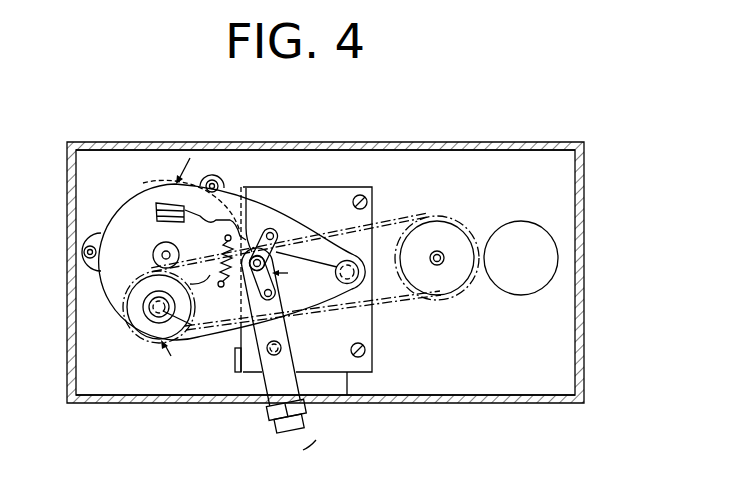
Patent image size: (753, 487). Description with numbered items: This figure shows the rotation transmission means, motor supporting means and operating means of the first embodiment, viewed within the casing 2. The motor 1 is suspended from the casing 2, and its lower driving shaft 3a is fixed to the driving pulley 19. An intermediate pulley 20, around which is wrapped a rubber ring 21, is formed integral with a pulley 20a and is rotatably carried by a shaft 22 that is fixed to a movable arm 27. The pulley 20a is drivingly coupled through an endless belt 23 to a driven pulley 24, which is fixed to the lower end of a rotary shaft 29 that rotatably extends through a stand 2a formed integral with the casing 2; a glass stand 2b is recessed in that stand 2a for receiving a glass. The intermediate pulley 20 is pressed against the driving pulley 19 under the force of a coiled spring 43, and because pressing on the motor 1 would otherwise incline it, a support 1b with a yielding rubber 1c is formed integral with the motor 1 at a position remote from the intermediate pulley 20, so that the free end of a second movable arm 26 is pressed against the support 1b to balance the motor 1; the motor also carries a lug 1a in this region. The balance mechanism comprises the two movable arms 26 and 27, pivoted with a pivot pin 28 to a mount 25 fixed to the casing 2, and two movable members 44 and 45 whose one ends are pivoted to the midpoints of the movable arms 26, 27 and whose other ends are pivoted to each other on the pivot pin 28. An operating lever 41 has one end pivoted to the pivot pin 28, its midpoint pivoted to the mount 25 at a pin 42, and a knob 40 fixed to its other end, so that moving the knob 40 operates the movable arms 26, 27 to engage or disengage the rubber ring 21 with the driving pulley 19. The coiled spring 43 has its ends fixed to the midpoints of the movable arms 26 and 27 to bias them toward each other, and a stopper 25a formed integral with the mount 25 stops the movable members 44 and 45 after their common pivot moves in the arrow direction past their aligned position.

The motor 1 is at (123, 213).
The mounting lug 1a is at (104, 297).
The support 1b is at (160, 210).
The yielding rubber 1c is at (167, 203).
The casing 2 is at (67, 354).
The stand 2a is at (516, 142).
The glass stand 2b is at (520, 237).
The lower driving shaft 3a is at (163, 255).
The driving pulley 19 is at (156, 247).
The intermediate pulley 20 is at (138, 288).
The pulley 20a is at (155, 322).
The rubber ring 21 is at (125, 328).
The shaft 22 is at (180, 318).
The endless belt 23 is at (395, 303).
The driven pulley 24 is at (436, 233).
The mount 25 is at (373, 366).
The stopper 25a is at (237, 372).
The movable arm 26 is at (229, 200).
The movable arm 27 is at (228, 303).
The pivot pin 28 is at (350, 272).
The rotary shaft 29 is at (442, 264).
The knob 40 is at (305, 425).
The operating lever 41 is at (279, 367).
The pivot pin 42 is at (281, 346).
The coiled spring 43 is at (222, 266).
The movable member 44 is at (247, 203).
The movable member 45 is at (272, 281).